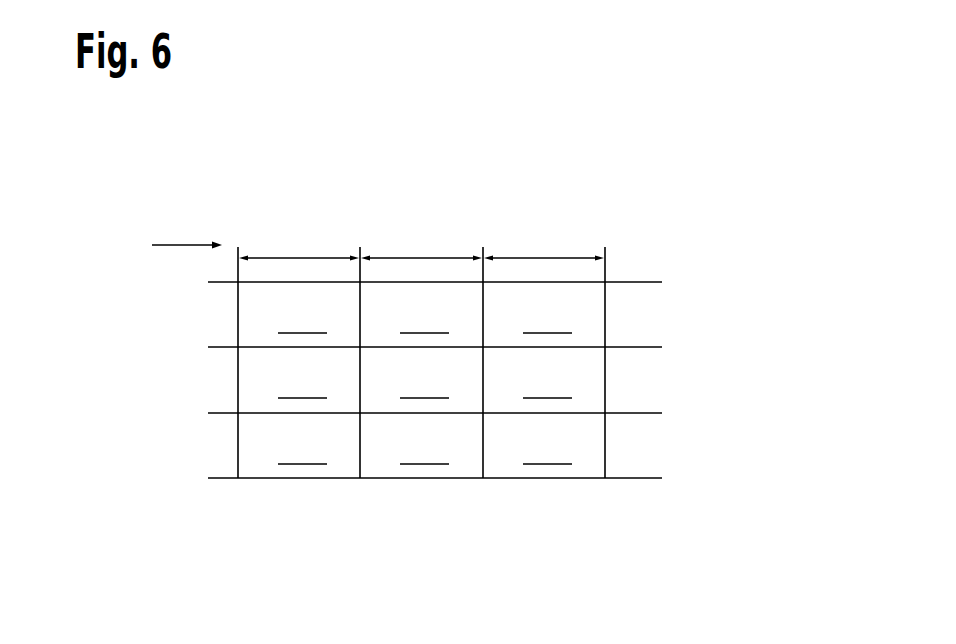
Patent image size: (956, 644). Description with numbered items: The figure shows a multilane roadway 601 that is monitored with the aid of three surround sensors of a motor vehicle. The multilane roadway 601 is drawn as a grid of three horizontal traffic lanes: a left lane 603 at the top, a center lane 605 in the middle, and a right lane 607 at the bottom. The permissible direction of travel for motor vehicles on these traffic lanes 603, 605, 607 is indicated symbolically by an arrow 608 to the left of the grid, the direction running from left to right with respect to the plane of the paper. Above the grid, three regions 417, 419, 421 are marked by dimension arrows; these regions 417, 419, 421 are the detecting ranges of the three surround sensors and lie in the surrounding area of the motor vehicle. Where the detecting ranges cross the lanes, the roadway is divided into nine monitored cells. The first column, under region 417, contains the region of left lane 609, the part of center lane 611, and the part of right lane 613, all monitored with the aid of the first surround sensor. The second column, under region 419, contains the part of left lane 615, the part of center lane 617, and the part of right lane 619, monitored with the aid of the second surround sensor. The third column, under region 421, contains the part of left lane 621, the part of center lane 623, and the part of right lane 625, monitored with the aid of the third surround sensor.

The multilane roadway 601 is at (706, 164).
The left lane 603 is at (670, 322).
The center lane 605 is at (670, 388).
The right lane 607 is at (671, 455).
The arrow 608 is at (177, 243).
The region 417 is at (300, 256).
The region 419 is at (422, 256).
The region 421 is at (545, 256).
The region of left lane 609 is at (302, 316).
The part of center lane 611 is at (302, 382).
The part of right lane 613 is at (302, 449).
The part of left lane 615 is at (424, 316).
The part of center lane 617 is at (424, 382).
The part of right lane 619 is at (424, 449).
The part of left lane 621 is at (547, 316).
The part of center lane 623 is at (547, 382).
The part of right lane 625 is at (547, 449).